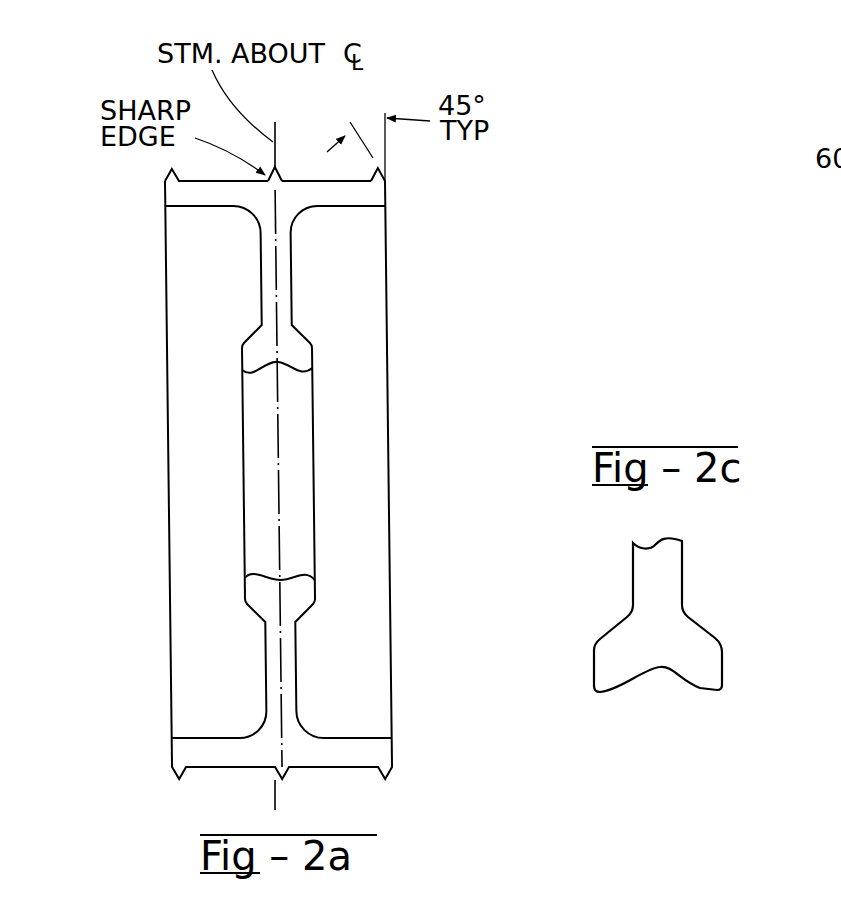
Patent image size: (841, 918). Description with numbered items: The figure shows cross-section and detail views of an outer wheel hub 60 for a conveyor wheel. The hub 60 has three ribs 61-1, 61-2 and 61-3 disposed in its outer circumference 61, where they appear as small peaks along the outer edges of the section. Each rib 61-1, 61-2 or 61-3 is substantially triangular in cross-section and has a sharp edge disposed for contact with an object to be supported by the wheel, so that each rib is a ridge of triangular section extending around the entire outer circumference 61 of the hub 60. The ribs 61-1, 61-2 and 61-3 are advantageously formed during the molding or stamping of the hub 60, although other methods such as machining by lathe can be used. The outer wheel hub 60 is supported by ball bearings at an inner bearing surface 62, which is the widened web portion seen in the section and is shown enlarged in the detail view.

In FIG. 2A, the outer wheel hub 60 is at (430, 243).
In FIG. 2A, the outer circumference 61 is at (210, 183).
In FIG. 2A, the rib 61-1 is at (165, 175).
In FIG. 2A, the rib 61-2 is at (278, 172).
In FIG. 2A, the rib 61-3 is at (387, 172).
In FIG. 2A, the inner bearing surface 62 is at (262, 372).
In FIG. 2C, the inner bearing surface 62 is at (690, 678).